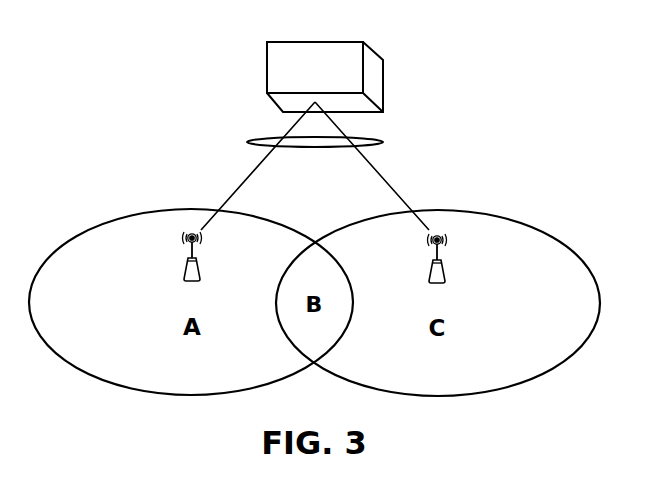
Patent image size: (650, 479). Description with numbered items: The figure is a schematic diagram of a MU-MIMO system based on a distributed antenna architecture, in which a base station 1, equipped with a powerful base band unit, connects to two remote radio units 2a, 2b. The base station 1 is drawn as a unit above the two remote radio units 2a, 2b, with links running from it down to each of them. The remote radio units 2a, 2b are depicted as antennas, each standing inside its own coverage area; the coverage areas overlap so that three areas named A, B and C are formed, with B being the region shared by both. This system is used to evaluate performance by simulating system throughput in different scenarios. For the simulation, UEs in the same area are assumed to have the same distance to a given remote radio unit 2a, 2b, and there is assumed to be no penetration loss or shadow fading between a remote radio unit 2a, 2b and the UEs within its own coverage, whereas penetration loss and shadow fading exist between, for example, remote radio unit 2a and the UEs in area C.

The base station 1 is at (267, 56).
The remote radio unit 2a is at (184, 251).
The remote radio unit 2b is at (443, 251).